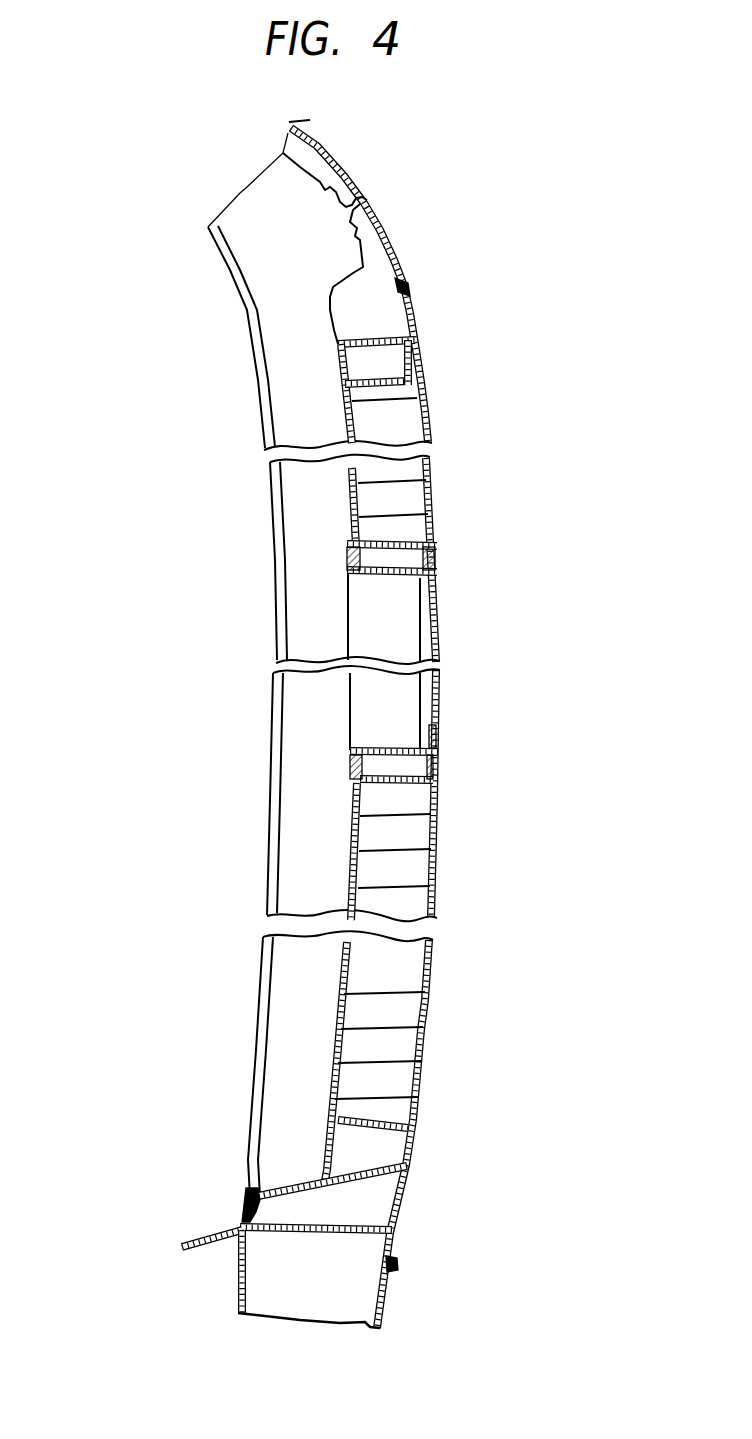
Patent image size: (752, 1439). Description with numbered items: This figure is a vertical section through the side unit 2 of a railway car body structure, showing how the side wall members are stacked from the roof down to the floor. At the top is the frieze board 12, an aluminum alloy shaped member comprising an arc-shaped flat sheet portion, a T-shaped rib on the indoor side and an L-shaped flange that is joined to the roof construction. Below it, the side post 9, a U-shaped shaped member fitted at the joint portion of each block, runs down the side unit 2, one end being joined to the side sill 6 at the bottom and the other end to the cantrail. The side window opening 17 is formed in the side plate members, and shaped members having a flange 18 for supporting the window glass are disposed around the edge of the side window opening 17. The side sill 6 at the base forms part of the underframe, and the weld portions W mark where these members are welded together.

The side unit 2 is at (86, 1215).
The side sill 6 is at (393, 1300).
The side post 9 is at (287, 852).
The frieze board 12 is at (364, 199).
The side window opening 17 is at (403, 622).
The flange 18 is at (440, 738).
The weld portion W is at (410, 285).